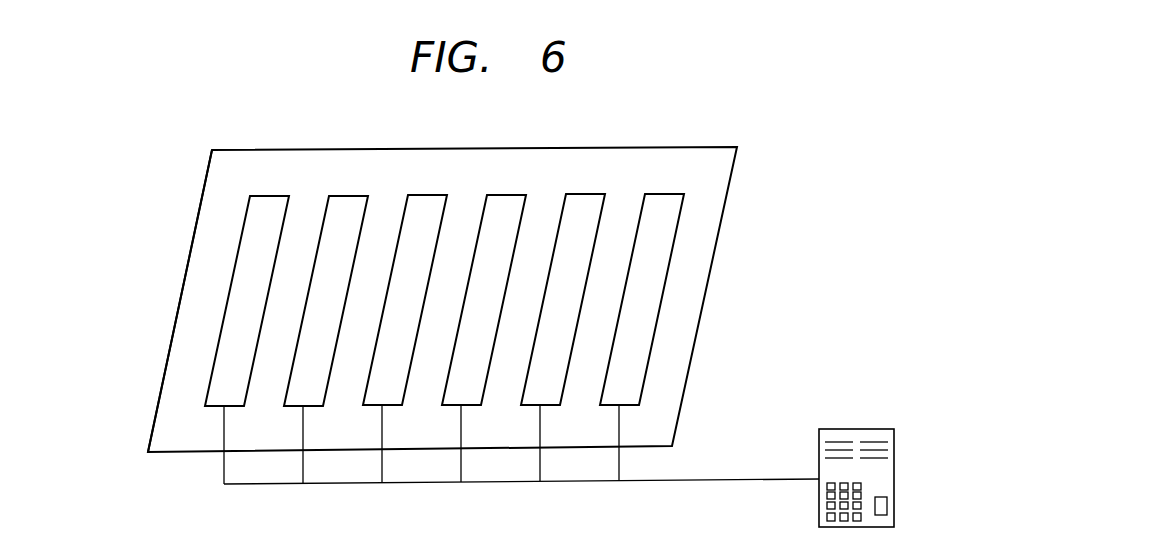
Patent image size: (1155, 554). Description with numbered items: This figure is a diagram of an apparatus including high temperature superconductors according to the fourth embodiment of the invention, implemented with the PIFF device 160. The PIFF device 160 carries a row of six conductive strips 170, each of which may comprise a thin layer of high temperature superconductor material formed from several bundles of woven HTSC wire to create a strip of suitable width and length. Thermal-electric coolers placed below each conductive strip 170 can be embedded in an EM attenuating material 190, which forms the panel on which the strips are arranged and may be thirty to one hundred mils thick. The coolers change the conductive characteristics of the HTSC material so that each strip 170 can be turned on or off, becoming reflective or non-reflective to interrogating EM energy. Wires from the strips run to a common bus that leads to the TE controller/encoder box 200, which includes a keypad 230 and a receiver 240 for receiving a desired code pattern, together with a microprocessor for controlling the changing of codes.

The PIFF device 160 is at (533, 128).
The conductive strips 170 is at (268, 208).
The EM attenuating material 190 is at (187, 350).
The TE controller/encoder box 200 is at (885, 470).
The keypad 230 is at (830, 521).
The receiver 240 is at (887, 505).